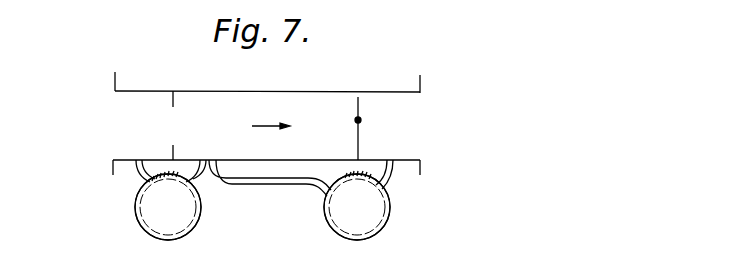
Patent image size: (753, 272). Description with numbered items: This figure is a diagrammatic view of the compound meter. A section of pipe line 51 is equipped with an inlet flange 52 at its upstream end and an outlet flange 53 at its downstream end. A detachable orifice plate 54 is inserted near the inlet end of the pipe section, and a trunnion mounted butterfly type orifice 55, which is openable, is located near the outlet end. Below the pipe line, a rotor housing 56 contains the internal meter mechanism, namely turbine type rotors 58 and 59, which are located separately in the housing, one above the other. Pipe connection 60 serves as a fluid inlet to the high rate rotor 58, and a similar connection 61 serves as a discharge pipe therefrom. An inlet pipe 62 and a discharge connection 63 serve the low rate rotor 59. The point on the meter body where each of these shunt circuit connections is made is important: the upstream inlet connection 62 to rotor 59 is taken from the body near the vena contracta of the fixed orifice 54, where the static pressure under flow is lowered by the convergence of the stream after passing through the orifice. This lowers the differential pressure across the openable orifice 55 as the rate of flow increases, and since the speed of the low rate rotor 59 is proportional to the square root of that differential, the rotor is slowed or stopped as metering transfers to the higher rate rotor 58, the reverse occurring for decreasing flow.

The section of pipe line 51 is at (253, 80).
The inlet flange 52 is at (115, 83).
The outlet flange 53 is at (424, 85).
The detachable orifice plate 54 is at (172, 99).
The butterfly type orifice 55 is at (356, 110).
The rotor housing 56 is at (136, 214).
The high rate rotor 58 is at (177, 187).
The low rate rotor 59 is at (373, 188).
The pipe connection 60 is at (138, 177).
The discharge pipe 61 is at (203, 177).
The inlet pipe 62 is at (283, 185).
The discharge connection 63 is at (386, 182).